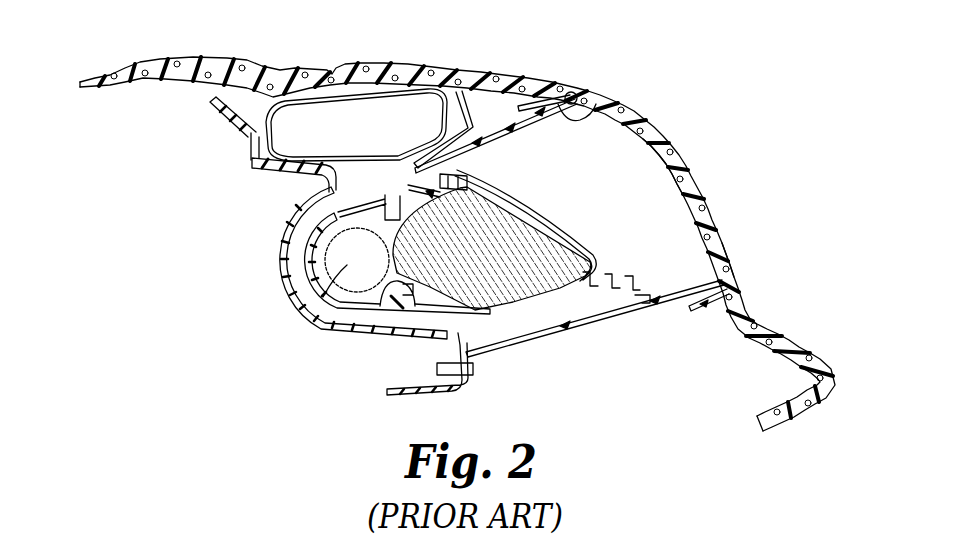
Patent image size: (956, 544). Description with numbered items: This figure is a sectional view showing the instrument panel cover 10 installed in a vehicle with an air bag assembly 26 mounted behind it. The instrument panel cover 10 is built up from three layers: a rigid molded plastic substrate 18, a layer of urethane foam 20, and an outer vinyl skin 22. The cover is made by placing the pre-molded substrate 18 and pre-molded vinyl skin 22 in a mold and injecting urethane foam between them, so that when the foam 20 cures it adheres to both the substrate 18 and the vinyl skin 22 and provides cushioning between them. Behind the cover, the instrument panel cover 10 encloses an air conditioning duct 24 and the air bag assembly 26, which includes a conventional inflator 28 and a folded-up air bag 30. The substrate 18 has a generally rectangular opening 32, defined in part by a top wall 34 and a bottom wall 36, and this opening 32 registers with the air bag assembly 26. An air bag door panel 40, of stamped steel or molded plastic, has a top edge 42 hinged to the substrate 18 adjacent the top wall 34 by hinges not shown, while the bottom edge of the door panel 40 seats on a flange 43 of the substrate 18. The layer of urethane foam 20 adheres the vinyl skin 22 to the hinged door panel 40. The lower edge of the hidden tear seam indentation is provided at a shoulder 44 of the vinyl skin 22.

The instrument panel cover 10 is at (457, 217).
The substrate 18 is at (410, 69).
The layer of urethane foam 20 is at (452, 73).
The vinyl skin 22 is at (491, 73).
The air conditioning duct 24 is at (252, 164).
The air bag assembly 26 is at (372, 333).
The inflator 28 is at (300, 290).
The air bag 30 is at (478, 240).
The opening 32 is at (590, 92).
The top wall 34 is at (600, 106).
The bottom wall 36 is at (730, 255).
The air bag door panel 40 is at (672, 178).
The top edge 42 is at (604, 108).
The flange 43 is at (722, 280).
The shoulder 44 is at (329, 68).